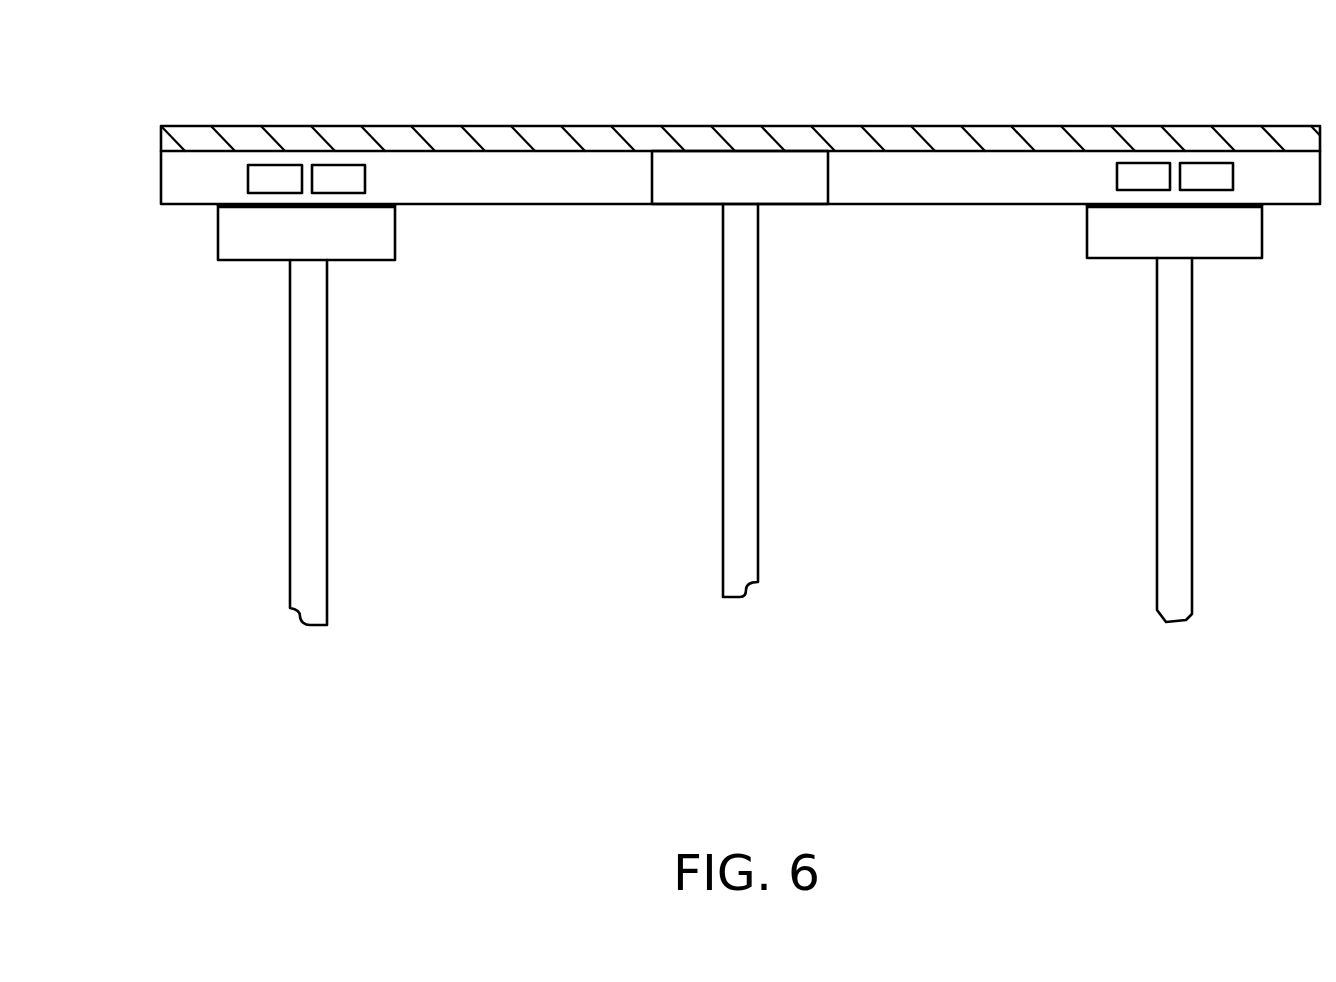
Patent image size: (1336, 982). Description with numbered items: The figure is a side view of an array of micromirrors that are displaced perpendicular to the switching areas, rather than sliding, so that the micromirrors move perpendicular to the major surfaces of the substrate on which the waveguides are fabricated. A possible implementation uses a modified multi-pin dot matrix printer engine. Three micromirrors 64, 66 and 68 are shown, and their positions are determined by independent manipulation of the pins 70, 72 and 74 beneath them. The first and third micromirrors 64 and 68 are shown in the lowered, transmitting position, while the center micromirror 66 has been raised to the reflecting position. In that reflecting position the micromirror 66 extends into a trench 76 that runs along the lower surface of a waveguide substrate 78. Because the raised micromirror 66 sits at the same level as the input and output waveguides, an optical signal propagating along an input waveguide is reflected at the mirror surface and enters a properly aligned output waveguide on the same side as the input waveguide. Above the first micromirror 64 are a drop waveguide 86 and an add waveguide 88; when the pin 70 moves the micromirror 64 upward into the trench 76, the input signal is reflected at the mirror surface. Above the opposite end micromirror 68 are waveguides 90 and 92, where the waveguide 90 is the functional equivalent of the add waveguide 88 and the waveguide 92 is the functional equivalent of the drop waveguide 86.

The first micromirror 64 is at (265, 252).
The center micromirror 66 is at (697, 192).
The third micromirror 68 is at (1133, 247).
The pin 70 is at (303, 538).
The pin 72 is at (735, 510).
The pin 74 is at (1170, 537).
The trench 76 is at (182, 200).
The waveguide substrate 78 is at (432, 130).
The drop waveguide 86 is at (340, 165).
The add waveguide 88 is at (282, 165).
The waveguide 90 is at (1143, 163).
The waveguide 92 is at (1203, 163).